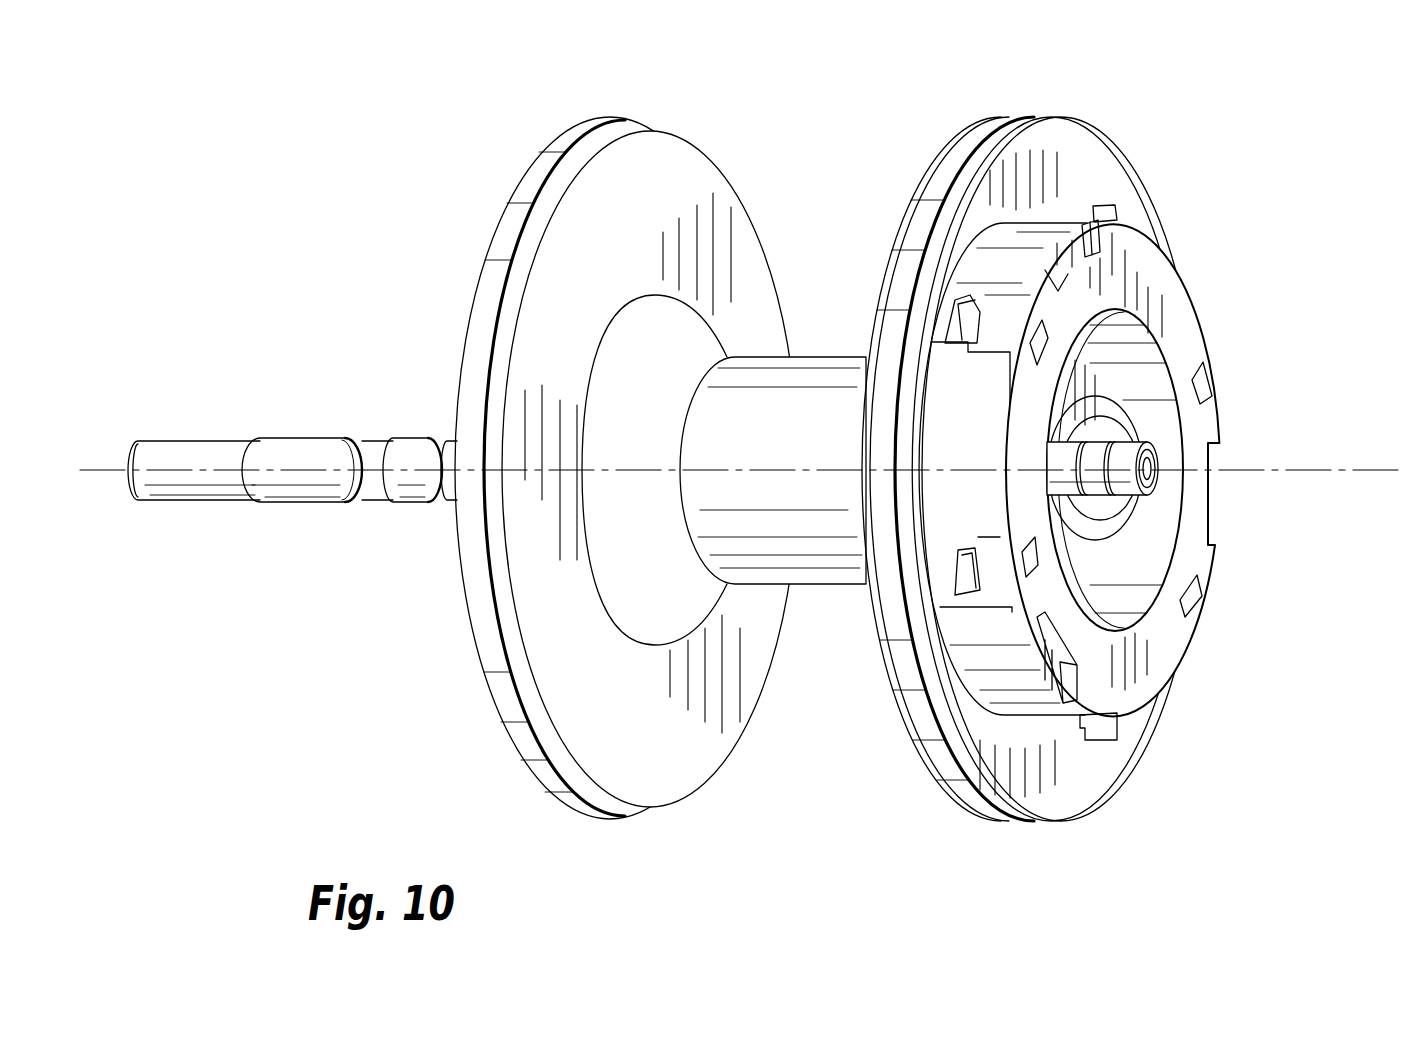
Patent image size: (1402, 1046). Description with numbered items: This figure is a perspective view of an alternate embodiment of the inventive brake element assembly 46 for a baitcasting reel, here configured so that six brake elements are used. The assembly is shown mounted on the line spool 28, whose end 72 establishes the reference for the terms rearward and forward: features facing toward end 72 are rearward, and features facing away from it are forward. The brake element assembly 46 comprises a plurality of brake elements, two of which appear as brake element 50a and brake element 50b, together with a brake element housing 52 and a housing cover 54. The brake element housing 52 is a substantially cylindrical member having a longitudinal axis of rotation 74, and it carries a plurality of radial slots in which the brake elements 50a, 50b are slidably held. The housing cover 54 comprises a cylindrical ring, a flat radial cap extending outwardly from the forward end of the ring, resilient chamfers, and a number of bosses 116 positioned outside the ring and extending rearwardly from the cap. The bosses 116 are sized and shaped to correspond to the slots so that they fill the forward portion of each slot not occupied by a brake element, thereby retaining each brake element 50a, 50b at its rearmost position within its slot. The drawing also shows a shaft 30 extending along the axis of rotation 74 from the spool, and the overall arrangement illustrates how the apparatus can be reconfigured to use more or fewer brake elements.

The line spool 28 is at (632, 120).
The shaft 30 is at (275, 443).
The brake element assembly 46 is at (1173, 462).
The brake element 50a is at (1100, 212).
The brake element 50b is at (1103, 732).
The brake element housing 52 is at (968, 393).
The housing cover 54 is at (1182, 342).
The end of line spool 72 is at (1043, 172).
The longitudinal axis of rotation 74 is at (1257, 470).
The bosses 116 is at (993, 317).